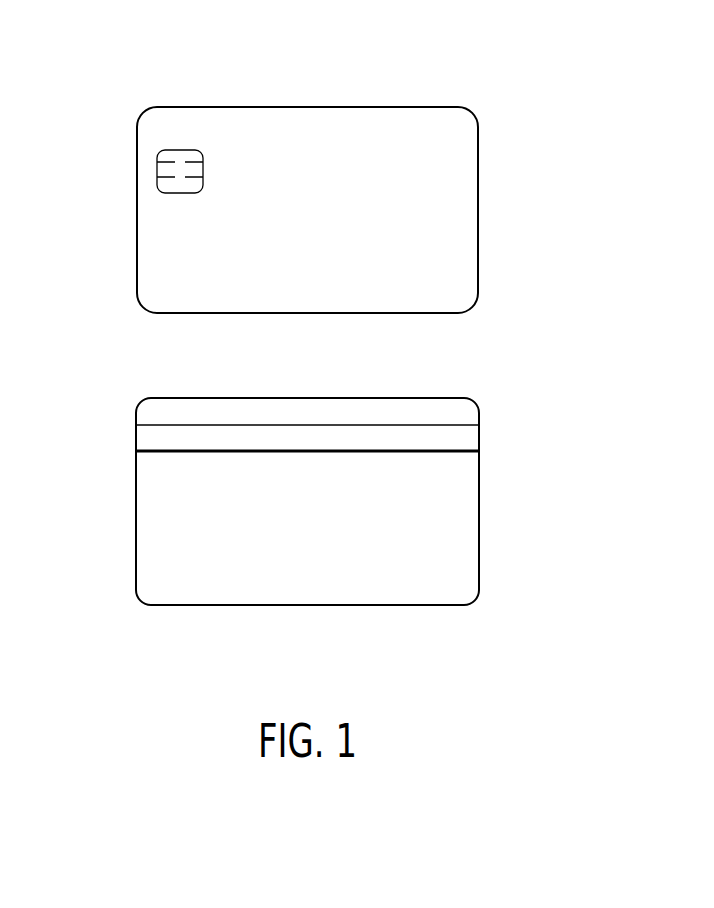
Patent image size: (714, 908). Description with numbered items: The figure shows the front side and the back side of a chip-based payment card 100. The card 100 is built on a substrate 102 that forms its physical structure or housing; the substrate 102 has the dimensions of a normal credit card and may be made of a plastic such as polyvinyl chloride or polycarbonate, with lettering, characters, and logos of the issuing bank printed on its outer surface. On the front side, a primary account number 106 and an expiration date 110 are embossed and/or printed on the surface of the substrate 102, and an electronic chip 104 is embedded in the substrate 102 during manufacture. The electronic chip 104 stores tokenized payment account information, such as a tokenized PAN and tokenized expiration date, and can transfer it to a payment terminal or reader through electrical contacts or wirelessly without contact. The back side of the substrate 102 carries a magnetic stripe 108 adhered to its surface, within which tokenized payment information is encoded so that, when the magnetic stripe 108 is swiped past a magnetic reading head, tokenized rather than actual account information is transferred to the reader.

The chip-based payment card 100 is at (171, 57).
The substrate 102 is at (480, 143).
The electronic chip 104 is at (157, 176).
The primary account number 106 is at (427, 212).
The magnetic stripe 108 is at (480, 432).
The expiration date 110 is at (457, 262).